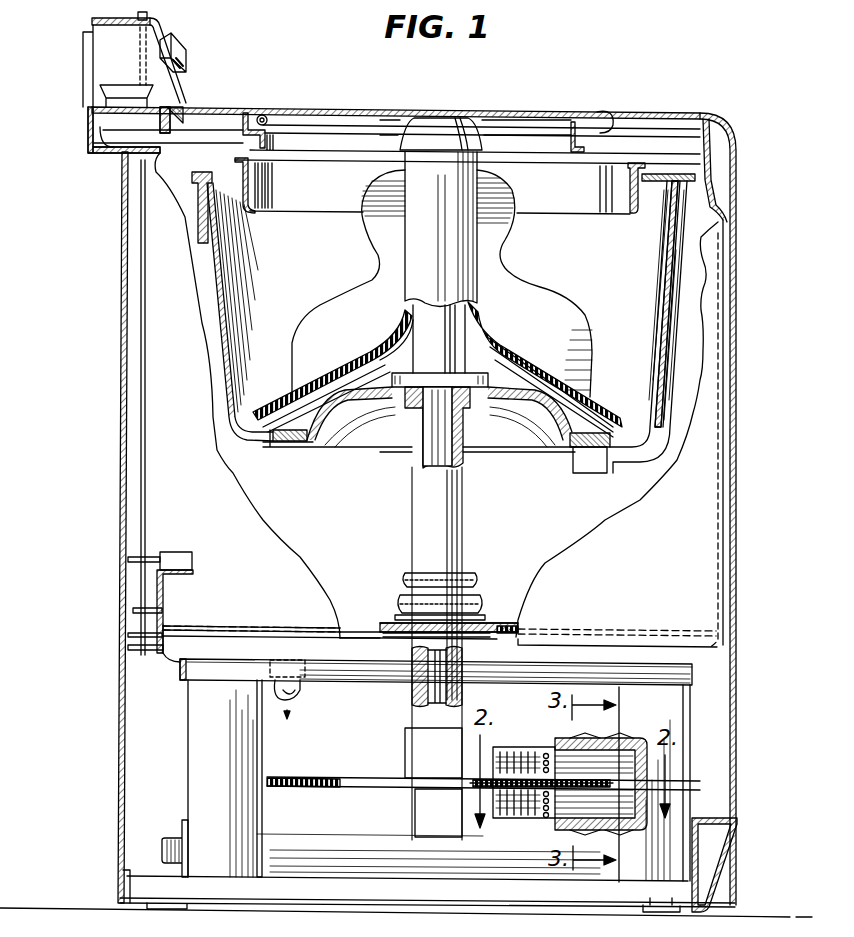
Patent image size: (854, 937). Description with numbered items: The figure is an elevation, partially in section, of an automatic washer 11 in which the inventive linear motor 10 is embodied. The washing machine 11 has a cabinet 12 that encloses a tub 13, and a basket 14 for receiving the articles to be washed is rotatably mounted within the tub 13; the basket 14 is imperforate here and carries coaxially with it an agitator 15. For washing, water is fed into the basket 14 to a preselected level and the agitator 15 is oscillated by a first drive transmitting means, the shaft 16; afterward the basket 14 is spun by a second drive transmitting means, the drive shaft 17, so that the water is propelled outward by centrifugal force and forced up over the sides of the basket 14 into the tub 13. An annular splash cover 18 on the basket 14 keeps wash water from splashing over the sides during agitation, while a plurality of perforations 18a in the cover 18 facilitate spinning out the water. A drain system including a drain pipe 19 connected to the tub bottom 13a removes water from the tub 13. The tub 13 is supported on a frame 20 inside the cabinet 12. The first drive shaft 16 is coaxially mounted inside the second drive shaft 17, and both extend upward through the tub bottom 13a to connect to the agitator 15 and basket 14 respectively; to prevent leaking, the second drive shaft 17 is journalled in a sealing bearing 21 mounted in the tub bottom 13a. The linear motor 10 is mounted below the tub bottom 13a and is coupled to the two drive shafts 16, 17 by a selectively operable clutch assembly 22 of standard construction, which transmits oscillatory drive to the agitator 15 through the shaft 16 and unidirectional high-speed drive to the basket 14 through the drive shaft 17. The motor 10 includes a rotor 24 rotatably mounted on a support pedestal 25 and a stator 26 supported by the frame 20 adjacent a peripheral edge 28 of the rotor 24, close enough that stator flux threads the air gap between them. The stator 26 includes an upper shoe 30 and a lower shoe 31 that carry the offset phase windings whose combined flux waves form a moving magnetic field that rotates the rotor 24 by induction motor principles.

The linear motor 10 is at (514, 745).
The automatic washer 11 is at (741, 336).
The cabinet 12 is at (740, 270).
The tub 13 is at (710, 170).
The tub bottom 13a is at (368, 627).
The basket 14 is at (245, 440).
The agitator 15 is at (562, 315).
The shaft 16 is at (450, 435).
The drive shaft 17 is at (413, 468).
The annular splash cover 18 is at (571, 193).
The perforations 18a is at (660, 175).
The drain pipe 19 is at (302, 683).
The frame 20 is at (184, 775).
The sealing bearing 21 is at (477, 599).
The clutch assembly 22 is at (406, 758).
The rotor 24 is at (363, 781).
The support pedestal 25 is at (421, 812).
The stator 26 is at (618, 743).
The peripheral edge 28 is at (312, 782).
The upper shoe 30 is at (532, 747).
The lower shoe 31 is at (508, 825).